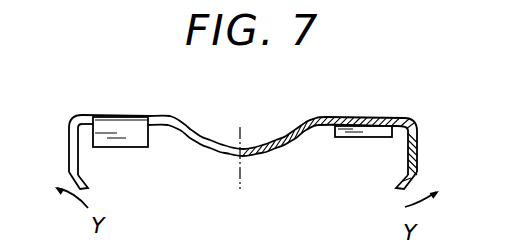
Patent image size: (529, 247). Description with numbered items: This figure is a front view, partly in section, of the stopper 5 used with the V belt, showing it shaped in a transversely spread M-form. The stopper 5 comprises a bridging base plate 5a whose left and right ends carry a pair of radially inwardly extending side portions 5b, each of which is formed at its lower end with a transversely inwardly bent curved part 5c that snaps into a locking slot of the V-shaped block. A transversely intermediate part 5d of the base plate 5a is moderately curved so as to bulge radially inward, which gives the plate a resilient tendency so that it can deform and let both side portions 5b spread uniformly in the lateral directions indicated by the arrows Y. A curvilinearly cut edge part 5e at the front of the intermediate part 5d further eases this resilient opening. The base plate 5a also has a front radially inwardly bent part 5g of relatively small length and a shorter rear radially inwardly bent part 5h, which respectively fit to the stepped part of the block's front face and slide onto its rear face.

The stopper 5 is at (82, 99).
The bridging base plate 5a is at (362, 117).
The side portions 5b is at (69, 146).
The bent curved parts 5c is at (90, 180).
The intermediate part 5d is at (248, 155).
The curvilinearly cut edge part 5e is at (212, 140).
The front bent parts 5g is at (135, 142).
The rear bent parts 5h is at (365, 137).